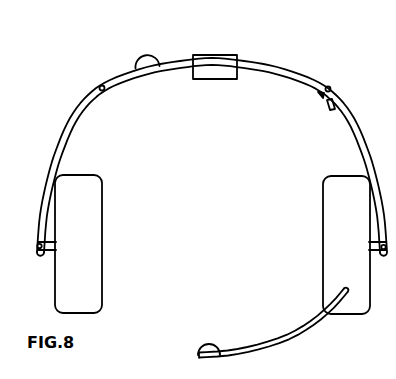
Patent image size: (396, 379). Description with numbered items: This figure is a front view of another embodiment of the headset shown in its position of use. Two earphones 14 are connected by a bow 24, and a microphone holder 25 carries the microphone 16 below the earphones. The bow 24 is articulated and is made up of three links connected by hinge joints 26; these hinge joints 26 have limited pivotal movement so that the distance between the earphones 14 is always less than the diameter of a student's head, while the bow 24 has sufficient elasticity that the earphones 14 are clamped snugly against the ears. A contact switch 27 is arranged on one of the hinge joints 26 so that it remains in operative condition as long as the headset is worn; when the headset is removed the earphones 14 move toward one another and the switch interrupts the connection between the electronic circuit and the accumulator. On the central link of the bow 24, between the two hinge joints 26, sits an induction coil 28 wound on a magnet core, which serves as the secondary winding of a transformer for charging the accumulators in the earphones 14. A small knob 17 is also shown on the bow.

The earphones 14 is at (82, 261).
The microphone 16 is at (199, 350).
The knob 17 is at (146, 60).
The bow 24 is at (70, 131).
The microphone holder 25 is at (256, 349).
The hinge joints 26 is at (101, 85).
The contact switch 27 is at (328, 104).
The induction coil 28 is at (196, 55).